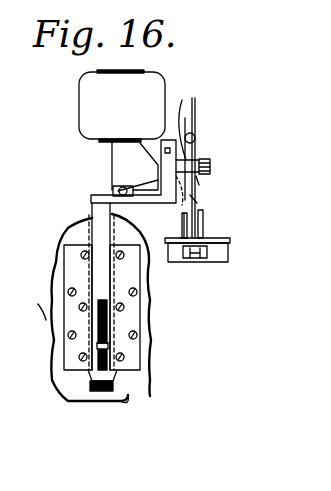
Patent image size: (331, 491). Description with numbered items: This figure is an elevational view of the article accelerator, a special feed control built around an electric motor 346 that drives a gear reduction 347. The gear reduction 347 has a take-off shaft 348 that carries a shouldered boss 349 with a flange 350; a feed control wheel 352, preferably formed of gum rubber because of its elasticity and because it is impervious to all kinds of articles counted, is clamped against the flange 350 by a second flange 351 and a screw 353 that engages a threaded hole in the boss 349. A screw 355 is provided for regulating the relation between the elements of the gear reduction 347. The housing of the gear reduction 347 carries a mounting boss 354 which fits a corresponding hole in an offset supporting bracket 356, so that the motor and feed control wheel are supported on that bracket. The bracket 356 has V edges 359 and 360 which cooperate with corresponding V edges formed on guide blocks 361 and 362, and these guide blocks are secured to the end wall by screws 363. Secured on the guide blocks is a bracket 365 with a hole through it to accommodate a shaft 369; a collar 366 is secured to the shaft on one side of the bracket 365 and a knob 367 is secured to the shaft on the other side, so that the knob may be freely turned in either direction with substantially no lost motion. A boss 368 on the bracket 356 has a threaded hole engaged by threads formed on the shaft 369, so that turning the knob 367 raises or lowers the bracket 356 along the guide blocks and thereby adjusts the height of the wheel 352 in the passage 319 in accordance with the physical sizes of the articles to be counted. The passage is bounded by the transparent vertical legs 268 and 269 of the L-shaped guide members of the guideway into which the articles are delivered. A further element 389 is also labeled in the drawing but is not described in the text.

The electric motor 346 is at (80, 84).
The gear reduction 347 is at (118, 152).
The take-off shaft 348 is at (184, 142).
The shouldered boss 349 is at (198, 144).
The flange 350 is at (198, 130).
The second flange 351 is at (199, 184).
The feed control wheel 352 is at (196, 202).
The screw 353 is at (209, 162).
The mounting boss 354 is at (176, 222).
The screw 355 is at (113, 190).
The offset supporting bracket 356 is at (98, 232).
The V edge 359 is at (92, 212).
The V edge 360 is at (132, 300).
The guide block 361 is at (72, 270).
The guide block 362 is at (131, 277).
The screws 363 is at (80, 309).
The bracket 365 is at (90, 378).
The collar 366 is at (117, 387).
The knob 367 is at (128, 395).
The boss 368 is at (98, 350).
The shaft 369 is at (107, 318).
The cord 389 is at (25, 304).
The transparent vertical leg 268 is at (204, 219).
The transparent vertical leg 269 is at (182, 236).
The passage 319 is at (204, 238).